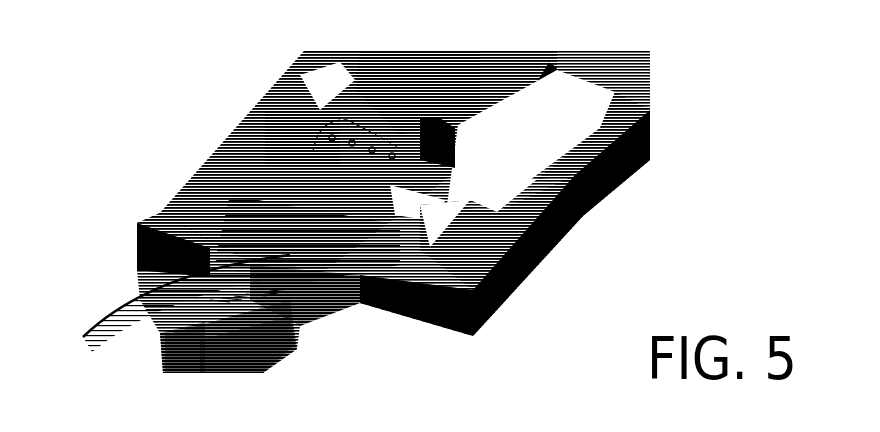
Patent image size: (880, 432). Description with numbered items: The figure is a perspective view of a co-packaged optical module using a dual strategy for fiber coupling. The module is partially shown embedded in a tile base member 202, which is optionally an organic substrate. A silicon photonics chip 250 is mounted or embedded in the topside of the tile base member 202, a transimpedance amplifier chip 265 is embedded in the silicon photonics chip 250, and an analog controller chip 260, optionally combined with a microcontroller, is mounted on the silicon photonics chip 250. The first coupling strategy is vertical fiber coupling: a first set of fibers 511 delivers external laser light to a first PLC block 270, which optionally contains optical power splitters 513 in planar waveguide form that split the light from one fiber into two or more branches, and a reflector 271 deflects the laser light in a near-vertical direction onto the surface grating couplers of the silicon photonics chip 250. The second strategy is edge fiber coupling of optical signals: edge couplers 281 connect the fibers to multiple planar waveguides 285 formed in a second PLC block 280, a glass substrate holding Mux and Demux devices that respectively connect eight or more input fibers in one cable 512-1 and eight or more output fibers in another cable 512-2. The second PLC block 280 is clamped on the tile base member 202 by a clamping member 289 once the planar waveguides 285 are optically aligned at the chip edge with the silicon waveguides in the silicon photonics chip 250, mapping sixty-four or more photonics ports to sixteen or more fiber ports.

The tile base member 202 is at (510, 264).
The silicon photonics chip 250 is at (593, 97).
The controller chip 260 is at (510, 72).
The transimpedance amplifier chip 265 is at (470, 182).
The first PLC block 270 is at (300, 140).
The optical reflector 271 is at (397, 117).
The second PLC block 280 is at (233, 240).
The edge couplers 281 is at (303, 346).
The planar waveguides 285 is at (363, 266).
The clamping member 289 is at (427, 232).
The first set of fibers 511 is at (125, 291).
The input fiber cable 512-1 is at (227, 369).
The output fiber cable 512-2 is at (157, 368).
The optical power splitters 513 is at (400, 149).